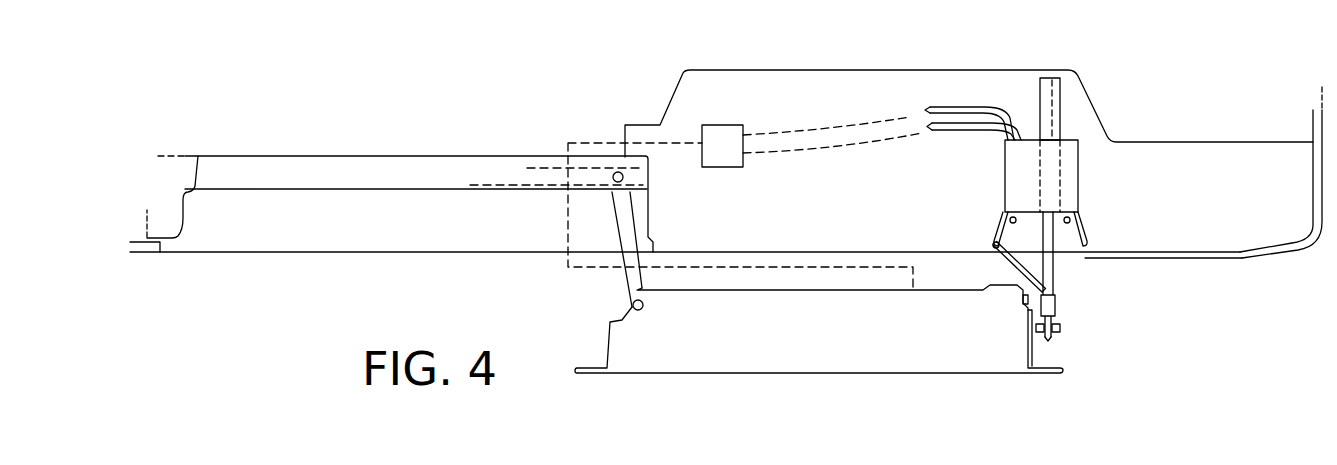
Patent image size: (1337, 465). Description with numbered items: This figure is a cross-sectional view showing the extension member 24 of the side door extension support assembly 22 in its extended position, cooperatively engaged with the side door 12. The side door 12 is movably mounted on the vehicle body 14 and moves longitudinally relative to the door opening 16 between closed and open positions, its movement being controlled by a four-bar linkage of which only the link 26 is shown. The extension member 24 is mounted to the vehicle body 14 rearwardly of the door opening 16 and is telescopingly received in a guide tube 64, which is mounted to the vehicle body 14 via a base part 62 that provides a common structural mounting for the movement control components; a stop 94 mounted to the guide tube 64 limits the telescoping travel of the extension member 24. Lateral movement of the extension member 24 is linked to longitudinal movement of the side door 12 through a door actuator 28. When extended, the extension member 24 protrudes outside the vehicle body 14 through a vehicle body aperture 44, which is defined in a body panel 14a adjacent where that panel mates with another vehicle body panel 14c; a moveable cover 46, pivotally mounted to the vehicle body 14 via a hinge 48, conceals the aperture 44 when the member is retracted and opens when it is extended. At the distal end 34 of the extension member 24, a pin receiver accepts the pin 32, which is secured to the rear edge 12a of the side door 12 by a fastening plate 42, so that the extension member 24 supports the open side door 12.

The side door 12 is at (828, 374).
The rear edge 12a is at (1025, 305).
The vehicle body 14 is at (1278, 247).
The body panel 14a is at (1227, 257).
The vehicle body panel 14c is at (945, 255).
The door opening 16 is at (183, 218).
The side door extension support assembly 22 is at (737, 55).
The extension member 24 is at (1058, 288).
The link 26 is at (643, 277).
The door actuator 28 is at (720, 137).
The pin 32 is at (1060, 328).
The distal end 34 is at (1053, 339).
The fastening plate 42 is at (1028, 350).
The vehicle body aperture 44 is at (1070, 262).
The moveable cover 46 is at (1010, 263).
The hinge 48 is at (990, 243).
The base part 62 is at (1078, 170).
The guide tube 64 is at (1062, 115).
The stop 94 is at (1036, 100).